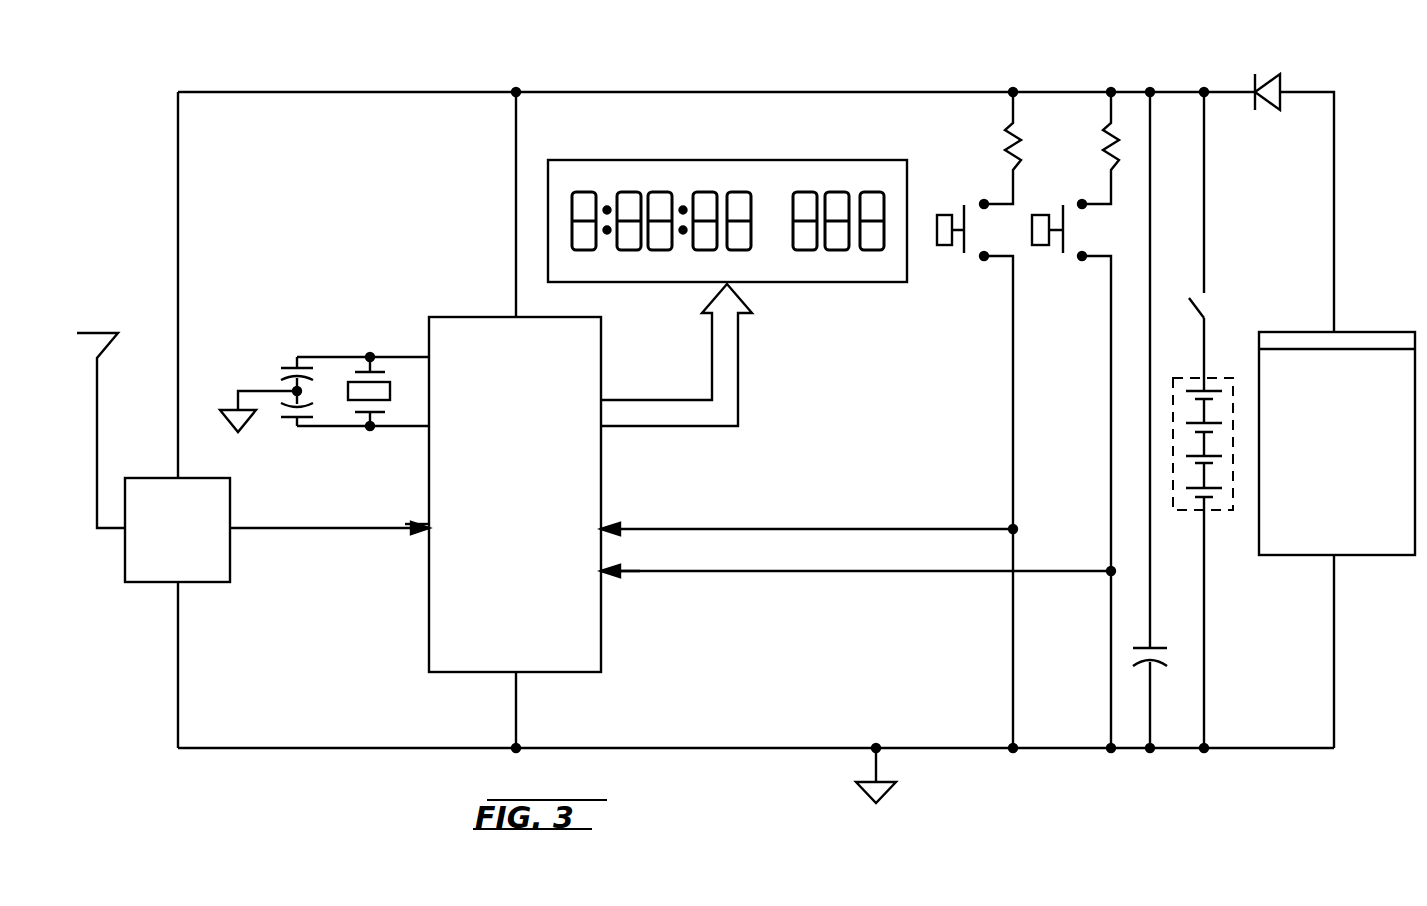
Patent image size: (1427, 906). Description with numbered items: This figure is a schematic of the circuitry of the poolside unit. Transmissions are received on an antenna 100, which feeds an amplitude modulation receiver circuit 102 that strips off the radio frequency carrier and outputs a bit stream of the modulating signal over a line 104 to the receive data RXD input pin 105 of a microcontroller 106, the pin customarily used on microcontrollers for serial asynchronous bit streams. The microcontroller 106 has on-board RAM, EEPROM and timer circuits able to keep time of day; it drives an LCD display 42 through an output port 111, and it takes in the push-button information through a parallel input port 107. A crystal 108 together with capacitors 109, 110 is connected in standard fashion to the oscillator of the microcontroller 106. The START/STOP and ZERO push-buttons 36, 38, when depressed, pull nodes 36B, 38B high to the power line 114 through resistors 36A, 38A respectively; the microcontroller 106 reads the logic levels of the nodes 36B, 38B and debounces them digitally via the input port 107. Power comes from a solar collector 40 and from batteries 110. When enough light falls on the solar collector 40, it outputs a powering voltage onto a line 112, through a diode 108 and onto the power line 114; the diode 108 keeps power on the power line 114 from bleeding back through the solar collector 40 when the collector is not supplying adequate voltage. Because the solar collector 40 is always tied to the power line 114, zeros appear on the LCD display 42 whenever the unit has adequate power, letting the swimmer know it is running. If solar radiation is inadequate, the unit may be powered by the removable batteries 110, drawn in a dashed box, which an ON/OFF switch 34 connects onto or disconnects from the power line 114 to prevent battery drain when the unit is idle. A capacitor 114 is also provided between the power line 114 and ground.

The ON/OFF switch 34 is at (1208, 306).
The START/STOP push-button 36 is at (945, 240).
The resistor 36A is at (1006, 134).
The node 36B is at (1011, 527).
The ZERO push-button 38 is at (1045, 240).
The resistor 38A is at (1104, 134).
The node 38B is at (1109, 570).
The solar collector 40 is at (1376, 332).
The LCD display 42 is at (811, 270).
The antenna 100 is at (97, 418).
The amplitude modulation receiver circuit 102 is at (218, 563).
The line 104 is at (362, 528).
The receive data RXD input pin 105 is at (423, 538).
The microcontroller 106 is at (443, 656).
The parallel input port 107 is at (604, 576).
The crystal / diode 108 is at (1268, 76).
The capacitor 109 is at (290, 366).
The capacitor / batteries 110 is at (286, 420).
The output port 111 is at (605, 432).
The line 112 is at (1336, 196).
The power line / capacitor 114 is at (373, 92).